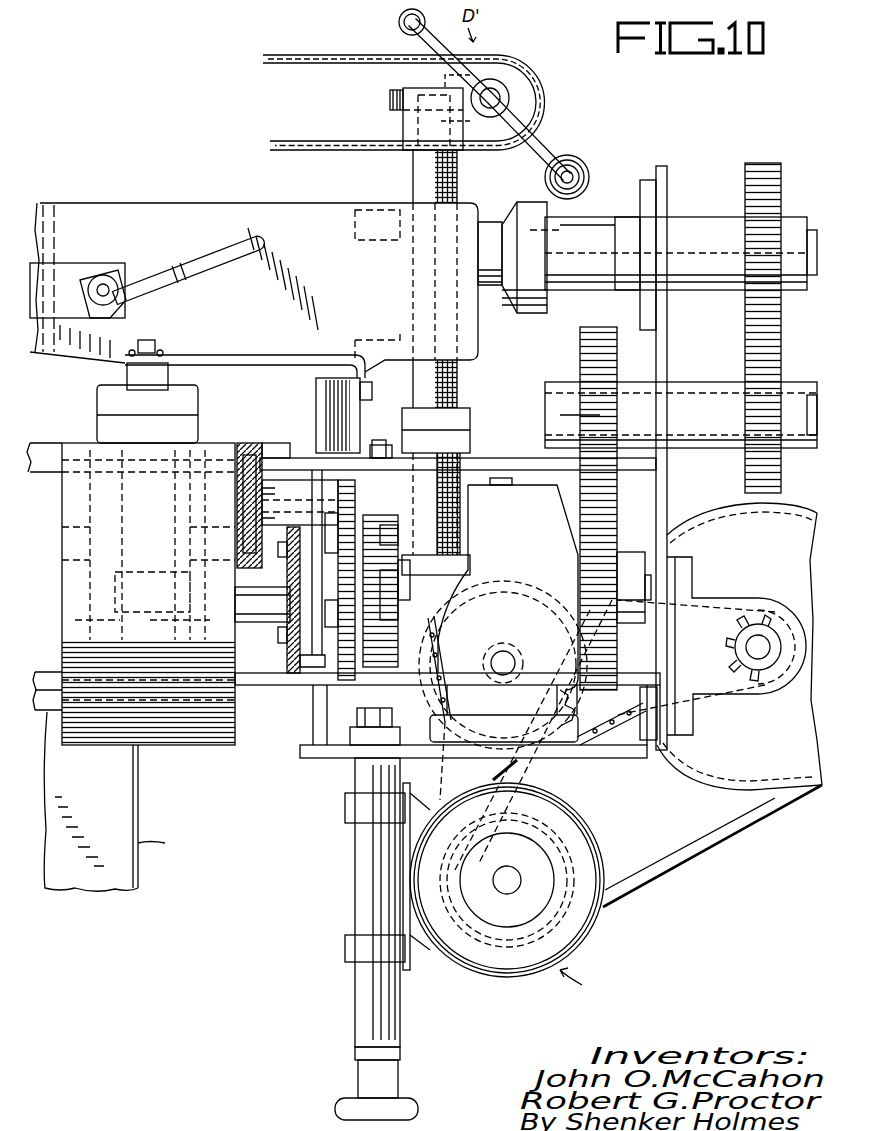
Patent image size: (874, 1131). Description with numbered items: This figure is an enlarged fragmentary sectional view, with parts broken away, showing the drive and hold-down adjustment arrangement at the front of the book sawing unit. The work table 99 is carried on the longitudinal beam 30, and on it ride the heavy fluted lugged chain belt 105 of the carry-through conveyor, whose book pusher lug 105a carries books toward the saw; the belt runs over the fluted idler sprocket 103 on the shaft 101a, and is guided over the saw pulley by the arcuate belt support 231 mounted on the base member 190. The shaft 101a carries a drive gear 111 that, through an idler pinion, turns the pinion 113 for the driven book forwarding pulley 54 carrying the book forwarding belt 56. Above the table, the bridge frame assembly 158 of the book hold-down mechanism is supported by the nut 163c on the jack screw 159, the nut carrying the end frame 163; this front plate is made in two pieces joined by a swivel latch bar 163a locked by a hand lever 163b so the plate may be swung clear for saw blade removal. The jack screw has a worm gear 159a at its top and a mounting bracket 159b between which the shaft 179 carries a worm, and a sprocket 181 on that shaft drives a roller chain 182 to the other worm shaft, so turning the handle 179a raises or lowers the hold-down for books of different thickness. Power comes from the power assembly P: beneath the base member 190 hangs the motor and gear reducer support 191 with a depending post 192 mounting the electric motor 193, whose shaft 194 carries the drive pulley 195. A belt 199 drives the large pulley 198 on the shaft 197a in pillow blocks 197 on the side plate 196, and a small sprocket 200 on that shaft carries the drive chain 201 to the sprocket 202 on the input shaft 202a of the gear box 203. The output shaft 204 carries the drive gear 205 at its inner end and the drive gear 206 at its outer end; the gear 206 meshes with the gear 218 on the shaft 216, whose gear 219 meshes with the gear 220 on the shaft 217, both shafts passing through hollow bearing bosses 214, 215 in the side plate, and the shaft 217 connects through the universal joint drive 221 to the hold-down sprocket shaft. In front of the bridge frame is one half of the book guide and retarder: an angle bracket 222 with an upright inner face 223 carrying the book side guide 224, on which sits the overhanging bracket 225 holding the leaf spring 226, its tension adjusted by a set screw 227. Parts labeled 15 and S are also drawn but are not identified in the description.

The machine frame 15 is at (534, 36).
The beam 30 is at (287, 657).
The book forwarding pulley 54 is at (272, 443).
The book forwarding belt 56 is at (247, 443).
The work table 99 is at (500, 458).
The shaft 101a is at (182, 555).
The fluted idler sprocket 103 is at (120, 720).
The chain belt 105 is at (160, 745).
The book pusher lug 105a is at (97, 410).
The drive gear 111 is at (325, 710).
The pinion 113 is at (355, 504).
The bridge frame assembly 158 is at (353, 42).
The jack screw 159 is at (413, 163).
The worm gear 159a is at (390, 99).
The mounting bracket 159b is at (403, 120).
The end frame 163 is at (336, 282).
The swivel latch bar 163a is at (62, 263).
The hand lever 163b is at (200, 250).
The nut 163c is at (370, 214).
The shaft 179 is at (500, 92).
The handle 179a is at (538, 140).
The sprocket 181 is at (538, 100).
The roller chain 182 is at (270, 62).
The base member 190 is at (275, 688).
The motor and gear reducer support 191 is at (325, 758).
The depending post 192 is at (355, 855).
The electric motor 193 is at (604, 858).
The motor shaft 194 is at (502, 892).
The drive pulley 195 is at (562, 872).
The side plate 196 is at (662, 166).
The pillow block 197 is at (765, 600).
The shaft 197a is at (748, 652).
The large pulley 198 is at (725, 760).
The belt 199 is at (757, 838).
The small sprocket 200 is at (745, 700).
The drive chain 201 is at (720, 585).
The sprocket 202 is at (500, 595).
The input shaft 202a is at (515, 645).
The gear box 203 is at (525, 514).
The output shaft 204 is at (645, 560).
The drive gear 205 is at (375, 672).
The drive gear 206 is at (580, 530).
The bearing boss 214 is at (625, 325).
The bearing boss 215 is at (615, 217).
The shaft 216 is at (815, 395).
The shaft 217 is at (812, 230).
The gear 218 is at (580, 340).
The gear 219 is at (745, 362).
The gear 220 is at (760, 163).
The universal joint drive 221 is at (492, 212).
The angle bracket 222 is at (378, 470).
The upright inner face 223 is at (375, 440).
The book side guide 224 is at (316, 405).
The overhanging bracket 225 is at (235, 344).
The leaf spring 226 is at (127, 372).
The set screw 227 is at (150, 340).
The arcuate belt support 231 is at (90, 535).
The power assembly P is at (544, 933).
The strip S' S is at (114, 801).